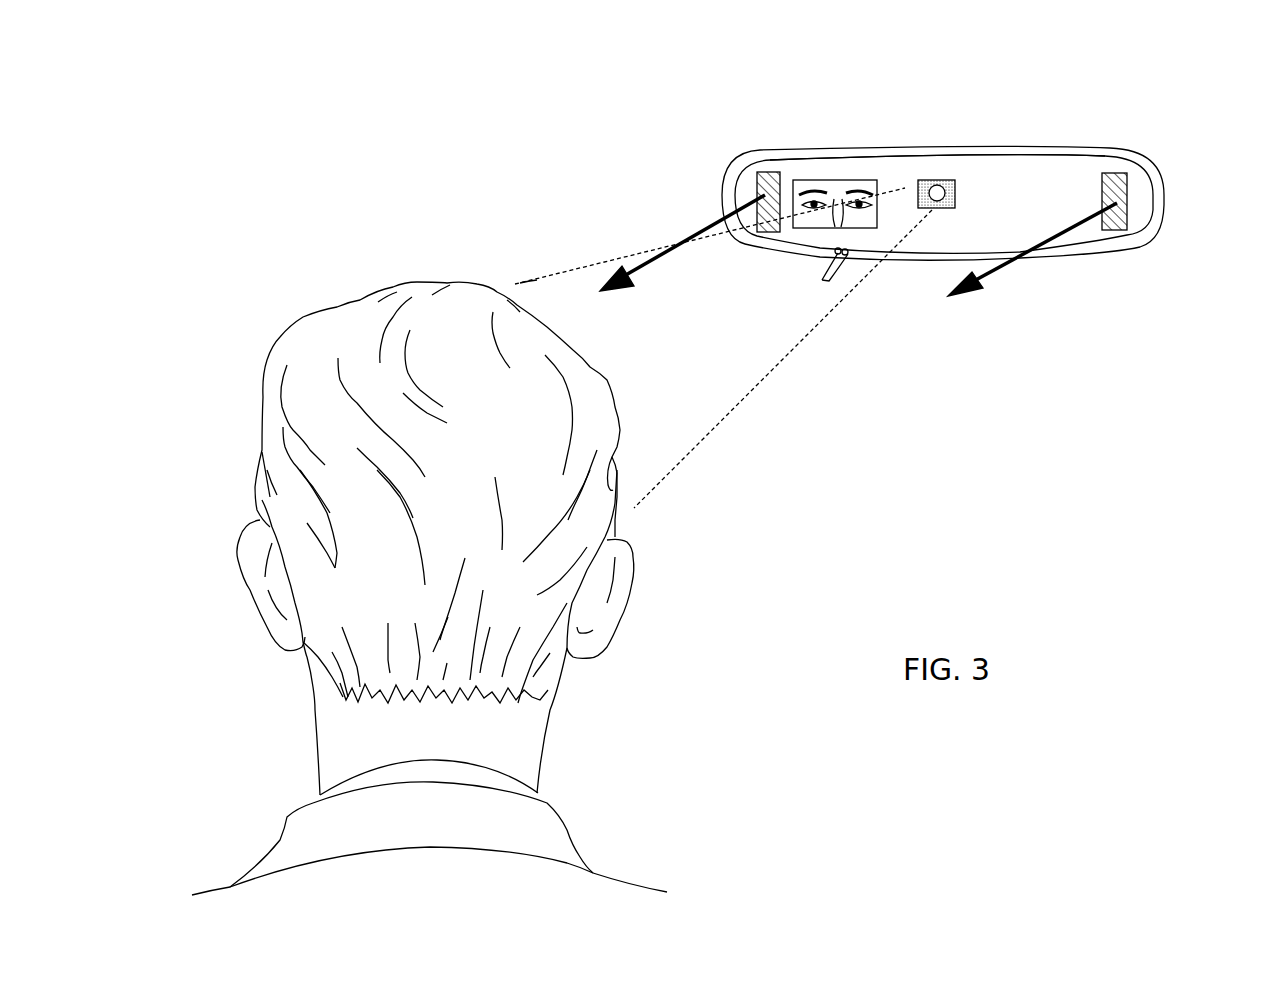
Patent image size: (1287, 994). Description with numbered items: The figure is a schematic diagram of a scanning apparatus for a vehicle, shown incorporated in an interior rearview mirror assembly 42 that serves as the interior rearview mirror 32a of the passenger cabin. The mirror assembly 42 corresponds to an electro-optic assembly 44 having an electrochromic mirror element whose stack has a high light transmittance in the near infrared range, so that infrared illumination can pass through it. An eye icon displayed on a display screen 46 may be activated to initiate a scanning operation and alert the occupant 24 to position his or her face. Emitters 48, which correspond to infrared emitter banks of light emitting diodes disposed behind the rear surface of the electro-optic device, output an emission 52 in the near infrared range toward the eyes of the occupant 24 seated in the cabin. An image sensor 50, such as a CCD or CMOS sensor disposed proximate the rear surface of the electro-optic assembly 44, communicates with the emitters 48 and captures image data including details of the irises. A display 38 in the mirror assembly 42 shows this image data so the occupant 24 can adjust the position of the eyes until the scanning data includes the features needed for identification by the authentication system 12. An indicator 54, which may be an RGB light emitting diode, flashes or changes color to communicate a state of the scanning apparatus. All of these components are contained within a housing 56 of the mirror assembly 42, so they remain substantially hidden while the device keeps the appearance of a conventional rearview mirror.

The authentication system 12 is at (806, 92).
The occupant 24 is at (362, 310).
The interior rearview mirror 32a is at (1163, 163).
The display 38 is at (828, 188).
The interior rearview mirror assembly 42 is at (1095, 150).
The electro-optic assembly 44 is at (850, 160).
The display screen 46 is at (990, 170).
The emitter 48 is at (756, 190).
The image sensor 50 is at (939, 188).
The emission 52 is at (648, 260).
The indicator 54 is at (833, 262).
The housing 56 is at (1105, 252).